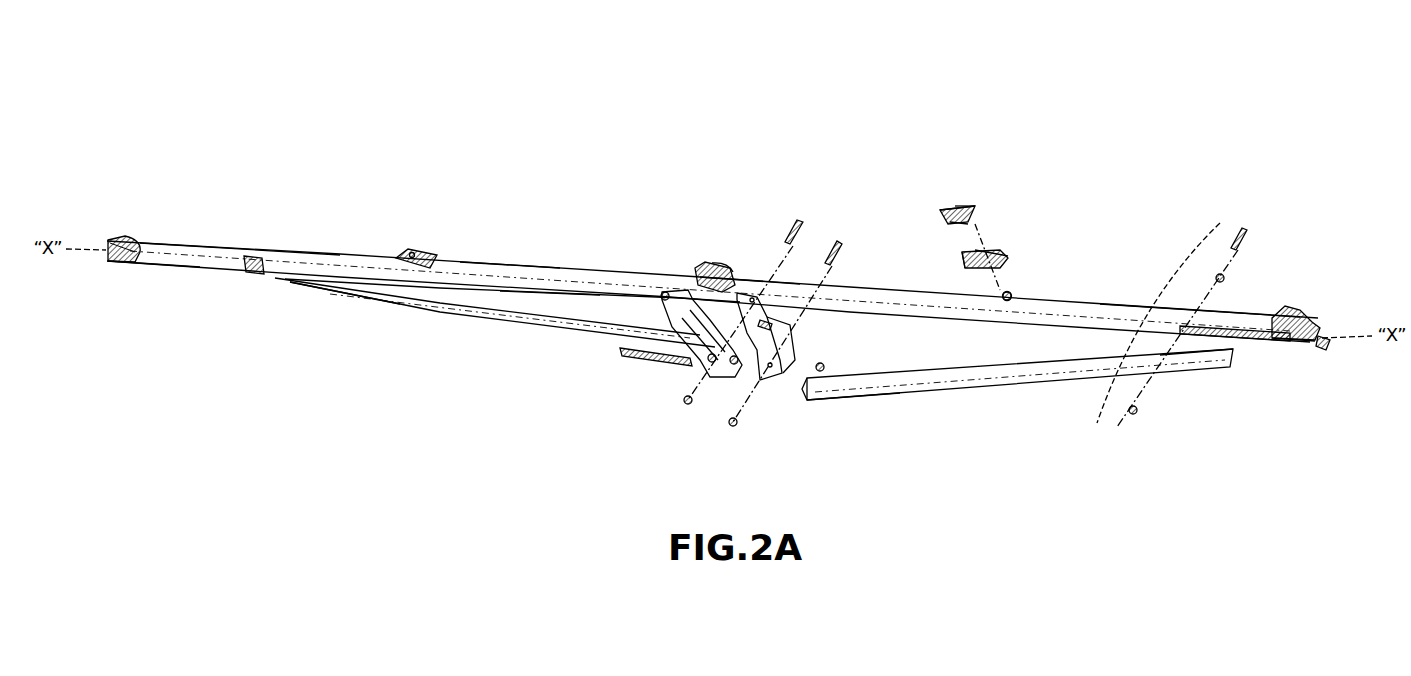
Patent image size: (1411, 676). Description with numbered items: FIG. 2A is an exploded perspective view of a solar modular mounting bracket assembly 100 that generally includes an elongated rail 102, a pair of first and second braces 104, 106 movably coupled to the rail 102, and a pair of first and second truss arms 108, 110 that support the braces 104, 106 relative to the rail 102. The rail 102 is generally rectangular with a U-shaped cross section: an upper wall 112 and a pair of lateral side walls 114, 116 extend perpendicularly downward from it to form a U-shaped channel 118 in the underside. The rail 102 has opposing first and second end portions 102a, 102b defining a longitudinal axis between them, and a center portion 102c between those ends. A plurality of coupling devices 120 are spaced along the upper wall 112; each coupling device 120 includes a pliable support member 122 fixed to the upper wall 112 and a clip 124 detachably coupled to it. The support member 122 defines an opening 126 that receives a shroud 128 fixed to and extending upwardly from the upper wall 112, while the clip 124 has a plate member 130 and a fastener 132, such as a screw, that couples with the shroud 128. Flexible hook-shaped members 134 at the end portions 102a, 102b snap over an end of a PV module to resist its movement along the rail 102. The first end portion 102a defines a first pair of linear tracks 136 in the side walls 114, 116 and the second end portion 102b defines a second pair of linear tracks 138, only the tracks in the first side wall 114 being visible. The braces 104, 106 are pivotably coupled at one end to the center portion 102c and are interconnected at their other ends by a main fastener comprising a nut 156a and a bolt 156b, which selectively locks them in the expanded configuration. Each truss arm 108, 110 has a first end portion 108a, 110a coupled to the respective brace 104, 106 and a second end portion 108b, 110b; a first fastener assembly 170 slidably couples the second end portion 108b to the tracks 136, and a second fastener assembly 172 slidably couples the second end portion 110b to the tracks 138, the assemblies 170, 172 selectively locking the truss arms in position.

The mounting bracket assembly 100 is at (170, 108).
The elongated rail 102 is at (597, 262).
The first end portion 102a is at (180, 252).
The second end portion 102b is at (1230, 308).
The center portion 102c is at (745, 293).
The first brace 104 is at (662, 305).
The second brace 106 is at (800, 315).
The first truss arm 108 is at (464, 322).
The first end portion of first truss arm 108a is at (618, 352).
The second end portion of first truss arm 108b is at (330, 298).
The second truss arm 110 is at (1028, 392).
The first end portion of second truss arm 110a is at (850, 398).
The second end portion of second truss arm 110b is at (1218, 364).
The upper wall 112 is at (495, 262).
The first lateral side wall 114 is at (542, 290).
The second lateral side wall 116 is at (1330, 322).
The U-shaped channel 118 is at (1328, 346).
The coupling devices 120 is at (420, 248).
The support member 122 is at (962, 258).
The clip 124 is at (940, 212).
The opening 126 is at (993, 250).
The shroud 128 is at (1012, 296).
The plate member 130 is at (960, 205).
The fastener 132 is at (958, 225).
The hook-shaped members 134 is at (127, 236).
The first pair of linear tracks 136 is at (178, 268).
The second pair of linear tracks 138 is at (1255, 342).
The nut 156a is at (815, 372).
The bolt 156b is at (640, 362).
The first fastener assembly 170 is at (256, 262).
The second fastener assembly 172 is at (1172, 325).